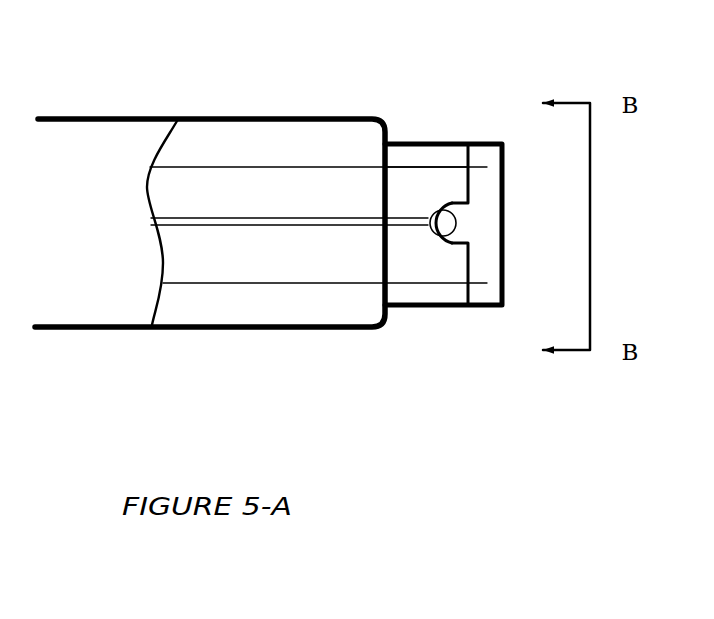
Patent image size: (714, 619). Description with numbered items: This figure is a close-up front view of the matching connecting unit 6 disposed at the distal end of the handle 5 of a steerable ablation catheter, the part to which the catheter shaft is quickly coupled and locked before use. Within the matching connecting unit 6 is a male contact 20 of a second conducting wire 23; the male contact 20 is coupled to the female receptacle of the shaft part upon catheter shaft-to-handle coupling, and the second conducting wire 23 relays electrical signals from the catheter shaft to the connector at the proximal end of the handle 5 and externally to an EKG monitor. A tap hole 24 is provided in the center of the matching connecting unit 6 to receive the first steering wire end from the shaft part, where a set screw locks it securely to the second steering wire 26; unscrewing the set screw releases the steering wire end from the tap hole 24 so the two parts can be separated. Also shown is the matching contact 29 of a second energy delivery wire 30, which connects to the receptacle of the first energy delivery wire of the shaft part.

The handle 5 is at (208, 338).
The matching connecting unit 6 is at (427, 308).
The male contact 20 is at (487, 290).
The second conducting wire 23 is at (397, 287).
The tap hole 24 is at (437, 205).
The second steering wire 26 is at (298, 232).
The matching contact 29 is at (483, 160).
The second energy delivery wire 30 is at (407, 158).